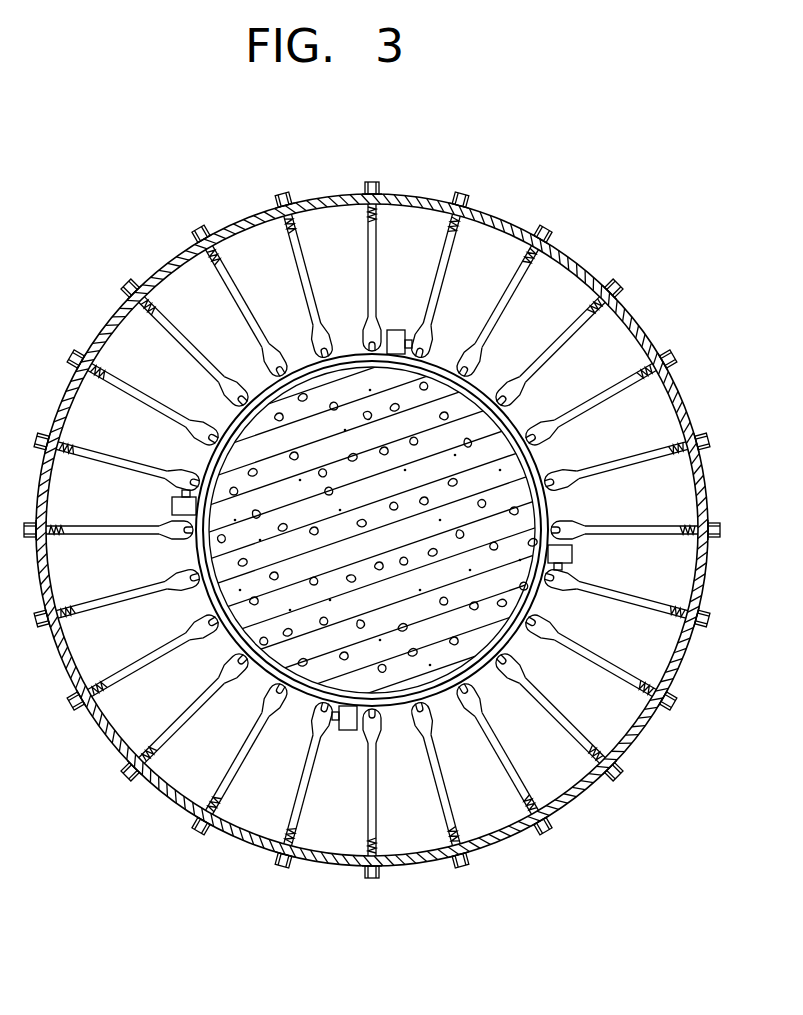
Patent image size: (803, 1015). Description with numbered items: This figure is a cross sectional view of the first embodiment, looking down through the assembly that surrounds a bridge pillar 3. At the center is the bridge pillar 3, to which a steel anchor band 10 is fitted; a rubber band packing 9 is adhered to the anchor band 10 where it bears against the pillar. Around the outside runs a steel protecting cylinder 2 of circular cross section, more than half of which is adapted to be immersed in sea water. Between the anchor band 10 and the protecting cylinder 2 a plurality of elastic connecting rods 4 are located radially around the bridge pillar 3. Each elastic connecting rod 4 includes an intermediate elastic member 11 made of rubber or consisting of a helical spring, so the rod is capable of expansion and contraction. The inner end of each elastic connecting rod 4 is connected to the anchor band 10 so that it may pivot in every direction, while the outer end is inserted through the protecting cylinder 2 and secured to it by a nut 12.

The protecting cylinder 2 is at (430, 196).
The bridge pillar 3 is at (550, 503).
The elastic connecting rod 4 is at (286, 256).
The rubber band packing 9 is at (275, 390).
The anchor band 10 is at (507, 404).
The intermediate elastic member 11 is at (364, 268).
The nut 12 is at (530, 222).